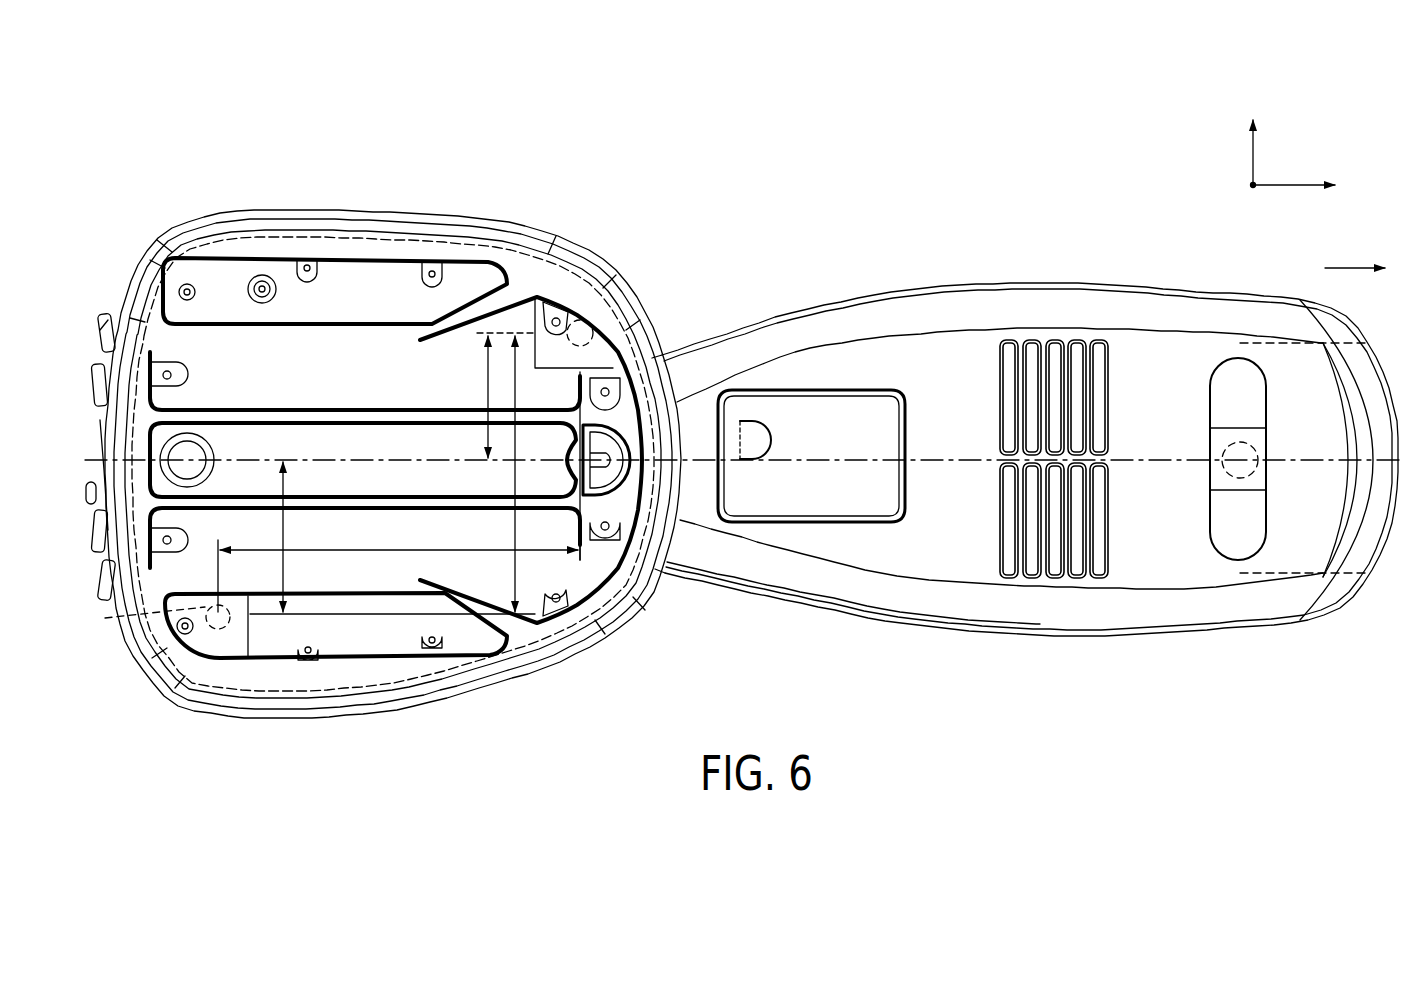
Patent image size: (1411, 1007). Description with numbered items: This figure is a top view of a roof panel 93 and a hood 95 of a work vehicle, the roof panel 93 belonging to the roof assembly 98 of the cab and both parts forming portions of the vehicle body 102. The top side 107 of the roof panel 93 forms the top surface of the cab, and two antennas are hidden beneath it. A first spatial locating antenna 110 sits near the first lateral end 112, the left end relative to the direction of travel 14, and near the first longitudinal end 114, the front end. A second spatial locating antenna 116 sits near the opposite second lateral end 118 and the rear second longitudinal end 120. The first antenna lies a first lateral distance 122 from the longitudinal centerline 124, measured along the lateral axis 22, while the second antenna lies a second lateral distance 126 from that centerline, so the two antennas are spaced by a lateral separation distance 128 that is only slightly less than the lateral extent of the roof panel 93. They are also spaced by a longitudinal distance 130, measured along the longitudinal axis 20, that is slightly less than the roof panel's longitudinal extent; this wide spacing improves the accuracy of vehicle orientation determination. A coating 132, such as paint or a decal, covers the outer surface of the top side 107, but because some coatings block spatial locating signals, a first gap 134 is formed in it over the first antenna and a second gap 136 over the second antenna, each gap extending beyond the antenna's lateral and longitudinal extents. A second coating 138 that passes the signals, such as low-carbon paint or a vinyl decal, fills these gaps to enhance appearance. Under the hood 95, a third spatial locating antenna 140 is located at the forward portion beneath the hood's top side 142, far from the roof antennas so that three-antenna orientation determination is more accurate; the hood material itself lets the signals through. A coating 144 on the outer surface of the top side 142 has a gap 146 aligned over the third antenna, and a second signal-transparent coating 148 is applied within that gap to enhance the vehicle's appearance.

The direction of travel 14 is at (1345, 268).
The longitudinal axis 20 is at (1288, 190).
The lateral axis 22 is at (1260, 168).
The roof panel 93 is at (180, 232).
The hood 95 is at (1128, 297).
The roof assembly 98 is at (128, 224).
The body 102 is at (1050, 238).
The top side 107 is at (142, 652).
The first spatial locating antenna 110 is at (580, 320).
The first lateral end 112 is at (252, 212).
The first longitudinal end 114 is at (692, 380).
The second spatial locating antenna 116 is at (116, 620).
The second lateral end 118 is at (385, 712).
The second longitudinal end 120 is at (105, 514).
The first lateral distance 122 is at (486, 400).
The longitudinal centerline 124 is at (330, 460).
The second lateral distance 126 is at (285, 548).
The lateral separation distance 128 is at (512, 470).
The longitudinal distance 130 is at (405, 548).
The coating 132 is at (343, 292).
The first gap 134 is at (536, 298).
The second gap 136 is at (211, 636).
The second coating 138 is at (600, 360).
The third spatial locating antenna 140 is at (1268, 480).
The top side 142 is at (1075, 603).
The coating 144 is at (1115, 610).
The gap 146 is at (1226, 478).
The second coating 148 is at (1265, 440).